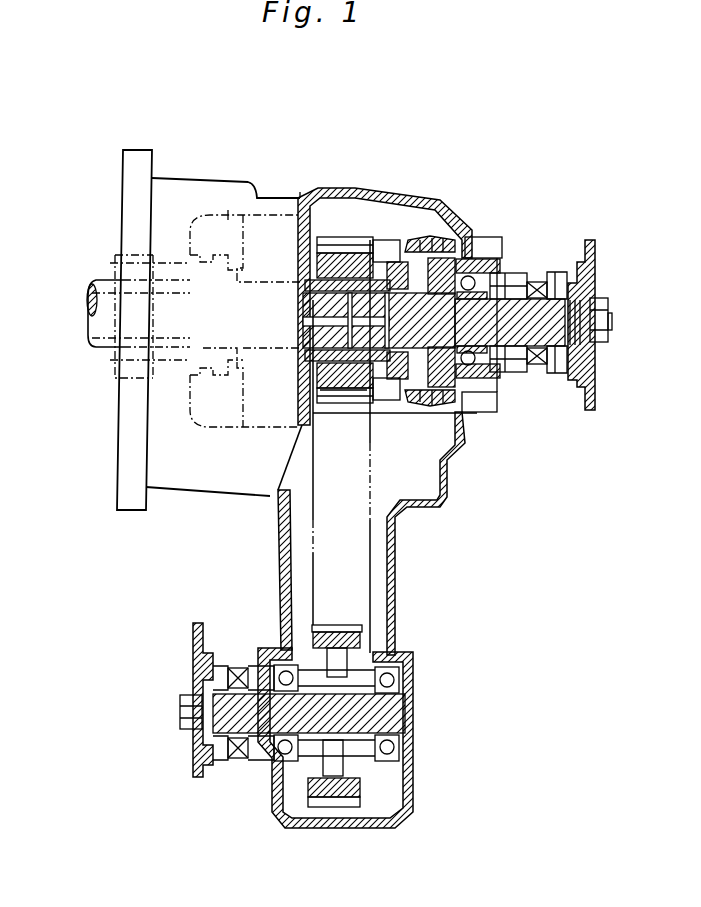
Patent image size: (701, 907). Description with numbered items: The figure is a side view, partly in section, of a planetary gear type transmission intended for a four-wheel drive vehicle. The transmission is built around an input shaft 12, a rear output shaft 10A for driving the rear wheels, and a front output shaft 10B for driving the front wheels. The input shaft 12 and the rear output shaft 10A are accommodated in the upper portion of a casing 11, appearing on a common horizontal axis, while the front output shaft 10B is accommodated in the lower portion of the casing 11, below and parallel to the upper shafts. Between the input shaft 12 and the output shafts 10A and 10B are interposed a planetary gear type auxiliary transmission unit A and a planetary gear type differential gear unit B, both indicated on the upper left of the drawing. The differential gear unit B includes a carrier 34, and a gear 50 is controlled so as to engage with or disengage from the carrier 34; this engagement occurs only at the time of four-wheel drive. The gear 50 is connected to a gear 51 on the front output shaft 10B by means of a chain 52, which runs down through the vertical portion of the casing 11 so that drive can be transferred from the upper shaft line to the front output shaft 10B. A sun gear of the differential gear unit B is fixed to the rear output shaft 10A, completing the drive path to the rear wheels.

The casing 11 is at (237, 182).
The input shaft 12 is at (93, 345).
The carrier 34 is at (345, 216).
The gear 50 is at (368, 247).
The rear output shaft 10A is at (525, 300).
The front output shaft 10B is at (253, 723).
The gear 51 is at (347, 637).
The chain 52 is at (368, 568).
The planetary gear type auxiliary transmission unit A is at (228, 210).
The planetary gear type differential gear unit B is at (300, 192).